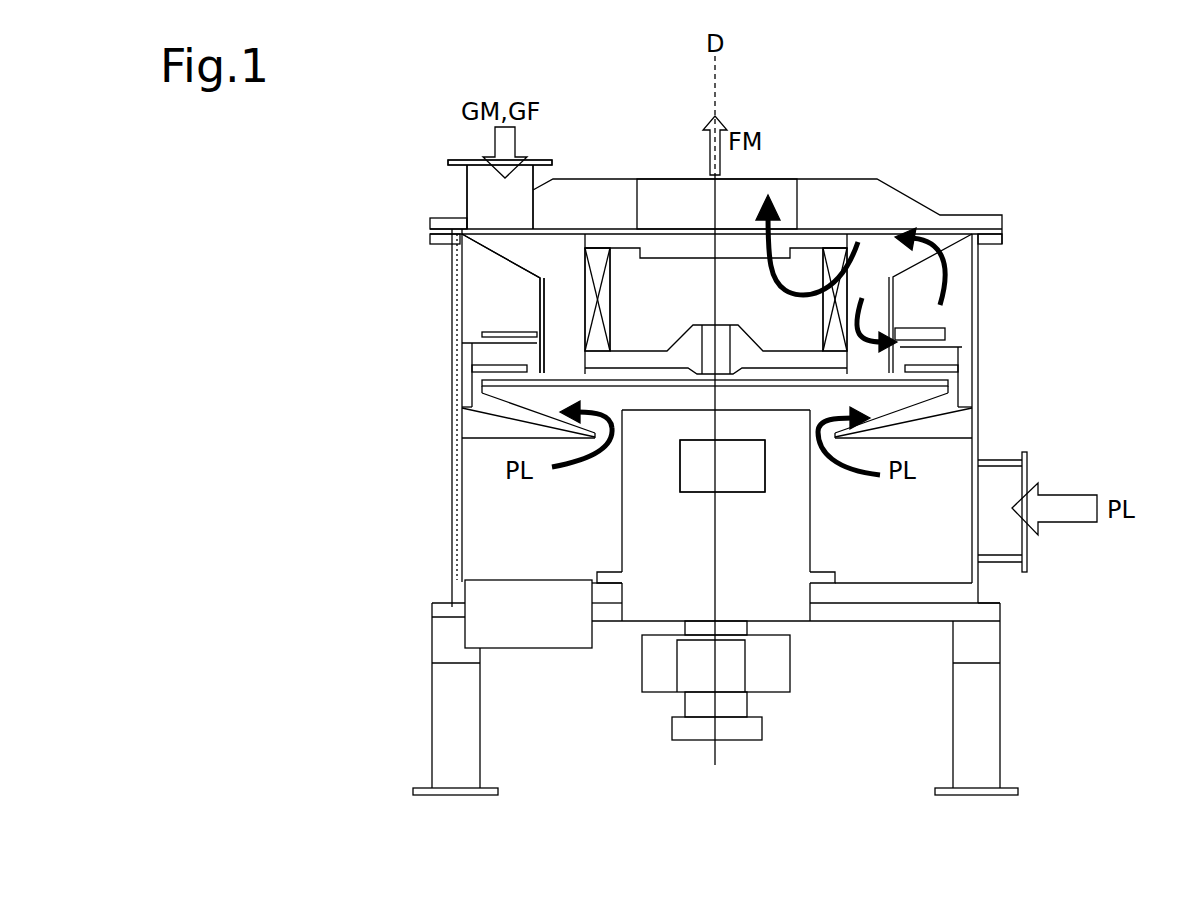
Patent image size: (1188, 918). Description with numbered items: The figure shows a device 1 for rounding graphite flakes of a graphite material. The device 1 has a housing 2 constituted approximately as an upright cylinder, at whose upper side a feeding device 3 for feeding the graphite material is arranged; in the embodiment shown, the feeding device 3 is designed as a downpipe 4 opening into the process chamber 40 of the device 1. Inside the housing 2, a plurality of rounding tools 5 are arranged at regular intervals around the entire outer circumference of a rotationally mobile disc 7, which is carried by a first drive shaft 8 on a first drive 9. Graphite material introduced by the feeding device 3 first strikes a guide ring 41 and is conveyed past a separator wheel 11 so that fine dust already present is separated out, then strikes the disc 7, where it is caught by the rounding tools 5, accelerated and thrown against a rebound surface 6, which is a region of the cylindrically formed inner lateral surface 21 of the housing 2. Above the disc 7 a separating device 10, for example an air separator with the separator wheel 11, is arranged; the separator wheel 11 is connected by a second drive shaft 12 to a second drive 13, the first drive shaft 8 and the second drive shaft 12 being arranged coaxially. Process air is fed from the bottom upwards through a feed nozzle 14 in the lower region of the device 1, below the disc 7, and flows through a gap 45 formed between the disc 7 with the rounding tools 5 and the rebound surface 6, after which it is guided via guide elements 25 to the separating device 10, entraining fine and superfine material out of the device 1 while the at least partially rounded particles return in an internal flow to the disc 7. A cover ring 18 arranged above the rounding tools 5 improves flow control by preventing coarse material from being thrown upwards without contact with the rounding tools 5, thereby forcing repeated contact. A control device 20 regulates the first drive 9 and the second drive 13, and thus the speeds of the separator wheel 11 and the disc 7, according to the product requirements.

The device 1 is at (546, 832).
The housing 2 is at (452, 458).
The feeding device 3 is at (478, 177).
The downpipe 4 is at (478, 177).
The rounding tools 5 is at (500, 370).
The rebound surface 6 is at (470, 362).
The rotationally mobile disc 7 is at (668, 393).
The first drive shaft 8 is at (745, 483).
The first drive 9 is at (745, 483).
The separating device 10 is at (602, 303).
The separator wheel 11 is at (602, 303).
The second drive shaft 12 is at (728, 707).
The second drive 13 is at (728, 680).
The feed nozzle 14 is at (1015, 478).
The cover ring 18 is at (935, 334).
The control device 20 is at (534, 629).
The inner lateral surface 21 is at (452, 262).
The guide elements 25 is at (940, 290).
The process chamber 40 is at (555, 263).
The guide ring 41 is at (452, 262).
The gap 45 is at (468, 348).